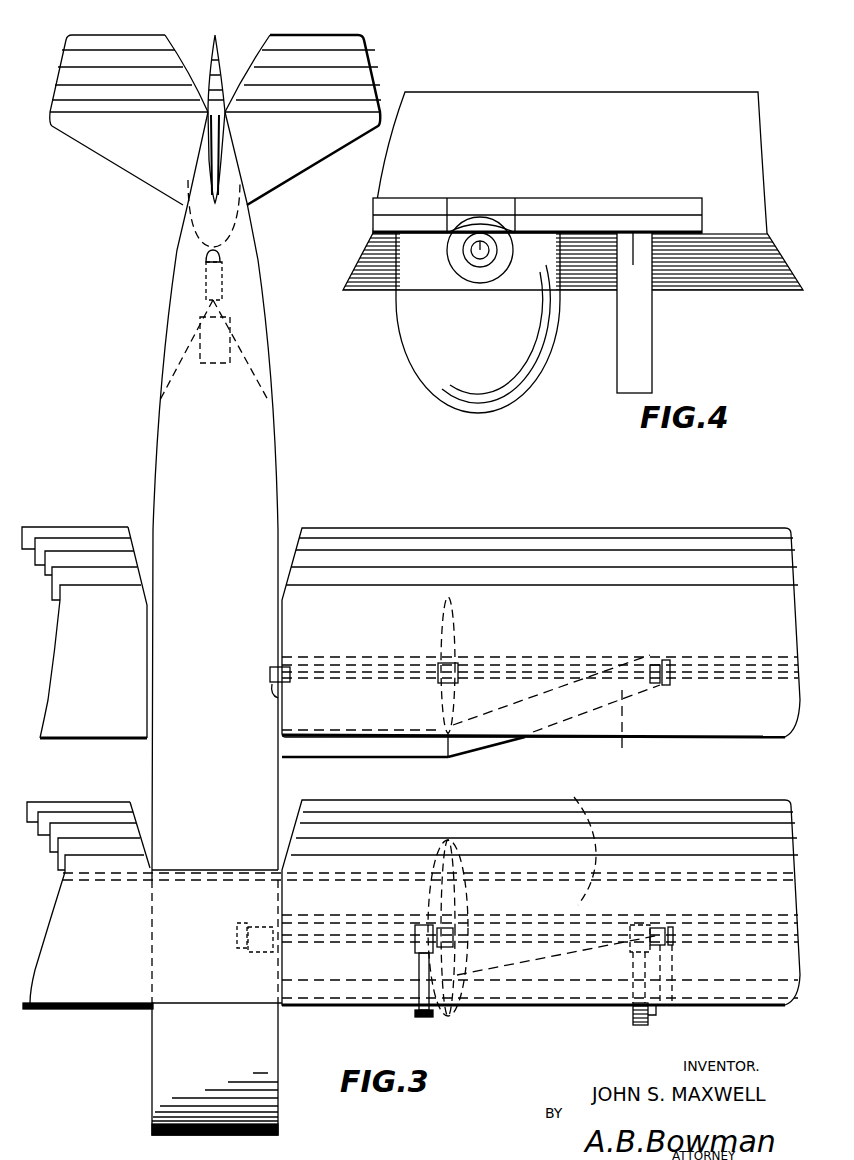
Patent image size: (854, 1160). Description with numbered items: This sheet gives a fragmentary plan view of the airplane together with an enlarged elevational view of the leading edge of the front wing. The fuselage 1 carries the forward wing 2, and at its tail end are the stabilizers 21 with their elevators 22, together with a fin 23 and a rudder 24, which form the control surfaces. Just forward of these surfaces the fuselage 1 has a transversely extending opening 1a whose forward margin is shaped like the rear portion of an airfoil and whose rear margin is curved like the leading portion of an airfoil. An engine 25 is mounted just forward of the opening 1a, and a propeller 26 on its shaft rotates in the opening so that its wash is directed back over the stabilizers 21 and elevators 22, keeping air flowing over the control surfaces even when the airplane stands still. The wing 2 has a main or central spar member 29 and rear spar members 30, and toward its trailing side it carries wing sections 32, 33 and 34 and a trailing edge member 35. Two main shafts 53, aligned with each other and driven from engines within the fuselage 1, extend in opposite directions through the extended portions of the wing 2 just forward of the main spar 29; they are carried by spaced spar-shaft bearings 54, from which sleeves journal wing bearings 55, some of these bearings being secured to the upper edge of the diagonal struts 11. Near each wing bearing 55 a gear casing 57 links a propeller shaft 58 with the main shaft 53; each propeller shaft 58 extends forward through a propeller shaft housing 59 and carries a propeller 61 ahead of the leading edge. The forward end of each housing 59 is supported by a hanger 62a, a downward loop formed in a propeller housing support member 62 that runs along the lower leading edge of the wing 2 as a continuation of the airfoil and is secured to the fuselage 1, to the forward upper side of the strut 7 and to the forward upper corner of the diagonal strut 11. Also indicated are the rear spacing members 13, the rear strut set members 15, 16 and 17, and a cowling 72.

In FIG. 3, the fuselage 1 is at (158, 755).
In FIG. 3, the transversely extending opening 1a is at (190, 262).
In FIG. 3, the forward wing 2 is at (107, 970).
In FIG. 4, the forward wing 2 is at (655, 110).
In FIG. 4, the forward strut member 7 is at (642, 345).
In FIG. 3, the forward strut member 11 is at (670, 970).
In FIG. 3, the rear spacing members 13 is at (397, 757).
In FIG. 3, the rear strut set member 15 is at (448, 757).
In FIG. 3, the rear strut set member 16 is at (456, 690).
In FIG. 3, the rear strut set member 17 is at (452, 625).
In FIG. 3, the stabilizers 21 is at (108, 148).
In FIG. 3, the elevators 22 is at (196, 40).
In FIG. 3, the fin 23 is at (212, 135).
In FIG. 3, the rudder 24 is at (218, 55).
In FIG. 3, the engine 25 is at (195, 337).
In FIG. 3, the propeller 26 is at (225, 275).
In FIG. 3, the main or central spar member 29 is at (388, 652).
In FIG. 3, the rear spar members 30 is at (578, 842).
In FIG. 3, the wing section 32 is at (585, 585).
In FIG. 3, the wing section 33 is at (535, 567).
In FIG. 3, the wing section 34 is at (490, 550).
In FIG. 3, the trailing edge member 35 is at (442, 538).
In FIG. 3, the main shafts 53 is at (556, 672).
In FIG. 3, the spar-shaft bearings 54 is at (285, 668).
In FIG. 3, the wing bearings 55 is at (278, 686).
In FIG. 3, the gear casings 57 is at (636, 925).
In FIG. 4, the propeller shafts 58 is at (487, 270).
In FIG. 3, the propeller shaft housings 59 is at (635, 1023).
In FIG. 4, the propeller shaft housings 59 is at (472, 262).
In FIG. 3, the propeller 61 is at (650, 1015).
In FIG. 3, the propeller housing support members 62 is at (113, 1010).
In FIG. 4, the propeller housing support members 62 is at (655, 223).
In FIG. 4, the hanger 62a is at (452, 217).
In FIG. 4, the cowling 72 is at (412, 293).